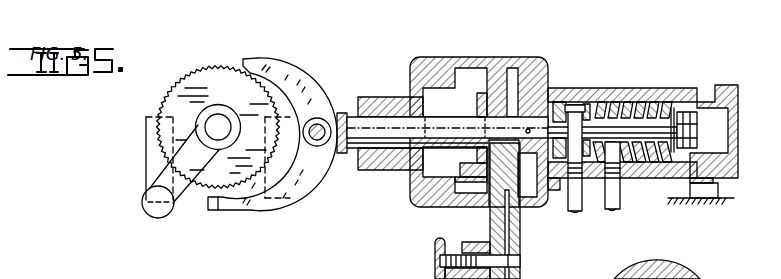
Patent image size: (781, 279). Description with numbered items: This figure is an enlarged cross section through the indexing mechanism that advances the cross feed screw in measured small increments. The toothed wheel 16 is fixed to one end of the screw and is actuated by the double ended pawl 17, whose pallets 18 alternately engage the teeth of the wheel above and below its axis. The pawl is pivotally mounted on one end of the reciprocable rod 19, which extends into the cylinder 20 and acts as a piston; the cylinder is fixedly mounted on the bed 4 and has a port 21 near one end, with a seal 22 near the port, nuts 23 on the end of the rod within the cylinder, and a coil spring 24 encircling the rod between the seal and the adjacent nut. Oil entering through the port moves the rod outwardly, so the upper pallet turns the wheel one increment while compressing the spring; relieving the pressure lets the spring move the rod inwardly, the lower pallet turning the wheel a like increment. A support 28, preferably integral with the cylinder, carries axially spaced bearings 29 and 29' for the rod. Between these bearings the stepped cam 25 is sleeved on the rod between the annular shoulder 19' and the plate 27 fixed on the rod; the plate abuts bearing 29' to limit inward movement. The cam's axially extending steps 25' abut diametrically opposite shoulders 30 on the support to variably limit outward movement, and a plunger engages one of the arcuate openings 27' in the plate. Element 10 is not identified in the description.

The bed 4 is at (702, 203).
The crank arm 10 is at (146, 131).
The toothed wheel 16 is at (207, 68).
The double ended pawl 17 is at (346, 56).
The pallets 18 is at (268, 70).
The reciprocable rod 19 is at (417, 178).
The annular shoulder 19' is at (512, 127).
The cylinder 20 is at (558, 77).
The port 21 is at (620, 186).
The seal 22 is at (566, 165).
The nuts 23 is at (688, 113).
The coil spring 24 is at (641, 95).
The stepped cam 25 is at (465, 201).
The steps or shoulders 25' is at (436, 215).
The plate 27 is at (523, 211).
The openings 27' is at (499, 258).
The support 28 is at (446, 57).
The bearing 29 is at (390, 116).
The bearing 29' is at (589, 109).
The shoulders 30 is at (438, 90).